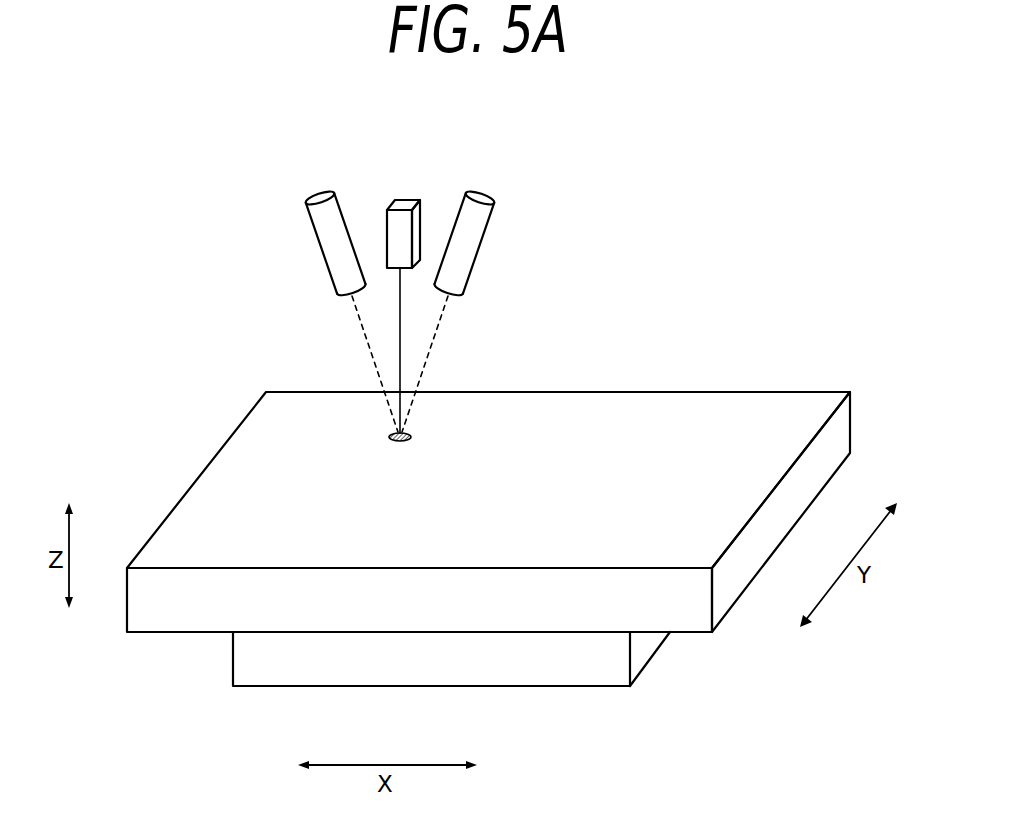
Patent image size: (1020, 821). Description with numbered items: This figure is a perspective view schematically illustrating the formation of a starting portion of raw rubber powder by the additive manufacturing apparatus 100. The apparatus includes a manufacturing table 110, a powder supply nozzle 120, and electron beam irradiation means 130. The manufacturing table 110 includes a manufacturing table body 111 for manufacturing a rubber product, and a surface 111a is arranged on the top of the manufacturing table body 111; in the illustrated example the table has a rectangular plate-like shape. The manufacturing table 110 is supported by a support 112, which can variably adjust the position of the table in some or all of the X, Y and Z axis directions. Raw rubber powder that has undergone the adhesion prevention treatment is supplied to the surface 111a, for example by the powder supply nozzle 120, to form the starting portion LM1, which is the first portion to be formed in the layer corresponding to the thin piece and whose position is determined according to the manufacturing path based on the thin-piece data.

The additive manufacturing apparatus 100 is at (695, 229).
The manufacturing table 110 is at (190, 449).
The manufacturing table body 111 is at (185, 608).
The surface 111a is at (562, 410).
The support 112 is at (516, 668).
The powder supply nozzle 120 is at (303, 190).
The electron beam irradiation means 130 is at (411, 189).
The starting portion LM1 is at (392, 441).